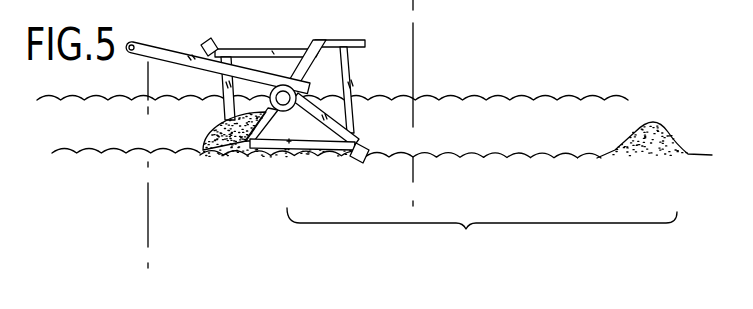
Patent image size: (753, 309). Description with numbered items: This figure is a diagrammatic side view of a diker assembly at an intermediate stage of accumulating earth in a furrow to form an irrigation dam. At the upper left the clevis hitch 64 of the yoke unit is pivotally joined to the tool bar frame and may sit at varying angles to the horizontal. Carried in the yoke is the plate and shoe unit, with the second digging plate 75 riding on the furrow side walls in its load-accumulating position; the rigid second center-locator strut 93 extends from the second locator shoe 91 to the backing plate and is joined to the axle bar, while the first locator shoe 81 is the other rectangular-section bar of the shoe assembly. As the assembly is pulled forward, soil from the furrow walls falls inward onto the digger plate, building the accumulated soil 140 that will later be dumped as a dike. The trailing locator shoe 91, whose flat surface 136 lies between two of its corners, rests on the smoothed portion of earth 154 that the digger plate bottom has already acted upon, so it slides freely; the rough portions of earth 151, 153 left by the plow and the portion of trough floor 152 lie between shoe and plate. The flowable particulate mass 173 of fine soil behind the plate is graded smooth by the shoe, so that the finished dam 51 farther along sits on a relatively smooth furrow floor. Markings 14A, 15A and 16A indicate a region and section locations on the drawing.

The first locator shoe 81 is at (214, 39).
The second digging plate 75 is at (350, 39).
The second center-locator strut 93 is at (316, 100).
The clevis hitch 64 is at (131, 53).
The accumulated soil 140 is at (221, 128).
The second locator shoe 91 is at (365, 152).
The smoothed portion of earth 154 is at (425, 155).
The rough portion of earth 153 is at (507, 156).
The portion of trough floor 152 is at (552, 155).
The rough portion of earth 151 is at (589, 170).
The dam 51 is at (639, 116).
The flowable particulate mass 173 is at (303, 160).
The surface of locator shoe 136 is at (353, 158).
The furrow region 14A is at (482, 234).
The section line 15A is at (151, 83).
The section line 16A is at (415, 48).